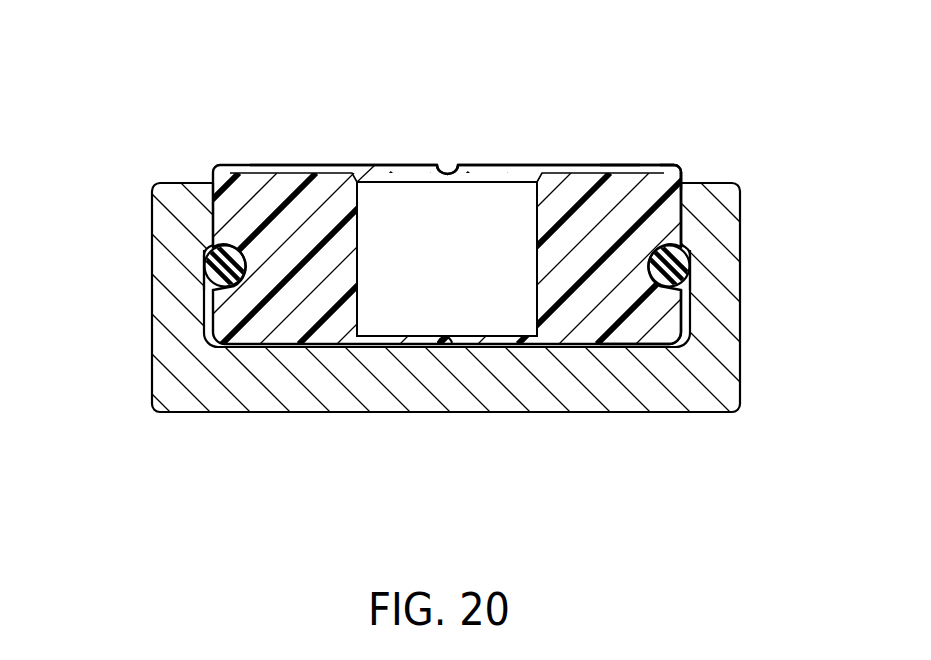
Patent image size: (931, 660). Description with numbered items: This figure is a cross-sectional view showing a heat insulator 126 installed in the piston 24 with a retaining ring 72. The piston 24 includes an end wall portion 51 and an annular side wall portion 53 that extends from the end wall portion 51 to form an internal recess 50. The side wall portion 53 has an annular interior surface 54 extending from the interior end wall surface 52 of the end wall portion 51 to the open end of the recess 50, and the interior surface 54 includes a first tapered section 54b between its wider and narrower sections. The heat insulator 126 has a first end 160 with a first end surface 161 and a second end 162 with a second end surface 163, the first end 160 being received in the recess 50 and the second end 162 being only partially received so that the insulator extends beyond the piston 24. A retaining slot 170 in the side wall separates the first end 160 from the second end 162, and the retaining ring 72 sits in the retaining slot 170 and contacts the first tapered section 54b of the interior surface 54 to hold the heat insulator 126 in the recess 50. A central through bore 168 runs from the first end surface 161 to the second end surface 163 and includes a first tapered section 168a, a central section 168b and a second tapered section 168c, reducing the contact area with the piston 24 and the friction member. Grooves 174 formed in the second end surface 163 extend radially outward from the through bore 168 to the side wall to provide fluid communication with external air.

The piston 24 is at (744, 232).
The internal recess 50 is at (205, 334).
The end wall portion 51 is at (258, 415).
The interior end wall surface 52 is at (455, 348).
The annular side wall portion 53 is at (158, 271).
The annular interior surface 54 is at (683, 303).
The first tapered section 54b is at (693, 246).
The retaining ring 72 is at (212, 292).
The heat insulator 126 is at (640, 157).
The first end 160 is at (692, 338).
The first end surface 161 is at (623, 337).
The second end 162 is at (692, 218).
The second end surface 163 is at (657, 165).
The through bore 168 is at (492, 211).
The first tapered section 168a is at (366, 346).
The central section 168b is at (357, 250).
The second tapered section 168c is at (368, 170).
The retaining slot 170 is at (248, 254).
The grooves 174 is at (258, 167).